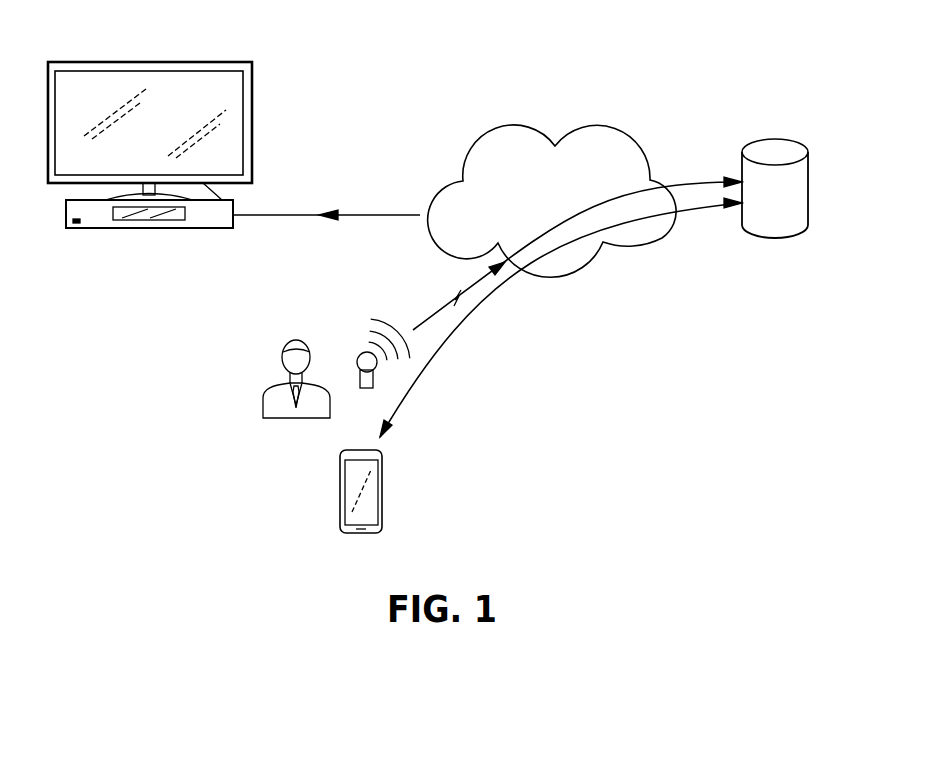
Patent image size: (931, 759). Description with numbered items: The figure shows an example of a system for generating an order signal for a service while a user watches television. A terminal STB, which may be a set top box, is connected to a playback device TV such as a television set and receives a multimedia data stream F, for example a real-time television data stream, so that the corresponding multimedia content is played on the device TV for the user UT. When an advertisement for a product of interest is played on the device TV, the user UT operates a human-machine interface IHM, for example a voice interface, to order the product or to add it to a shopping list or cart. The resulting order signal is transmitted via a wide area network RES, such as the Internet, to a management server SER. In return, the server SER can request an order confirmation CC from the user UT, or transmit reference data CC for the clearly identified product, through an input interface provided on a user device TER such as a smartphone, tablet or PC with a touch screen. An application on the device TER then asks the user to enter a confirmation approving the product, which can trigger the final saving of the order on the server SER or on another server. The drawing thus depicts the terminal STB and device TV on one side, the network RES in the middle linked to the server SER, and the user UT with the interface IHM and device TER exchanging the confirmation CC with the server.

The playback device TV is at (87, 62).
The terminal STB is at (97, 228).
The multimedia data stream F is at (297, 214).
The wide area network RES is at (582, 197).
The management server SER is at (785, 139).
The order confirmation CC is at (462, 325).
The human-machine interface IHM is at (357, 352).
The user UT is at (266, 396).
The user device TER is at (340, 505).